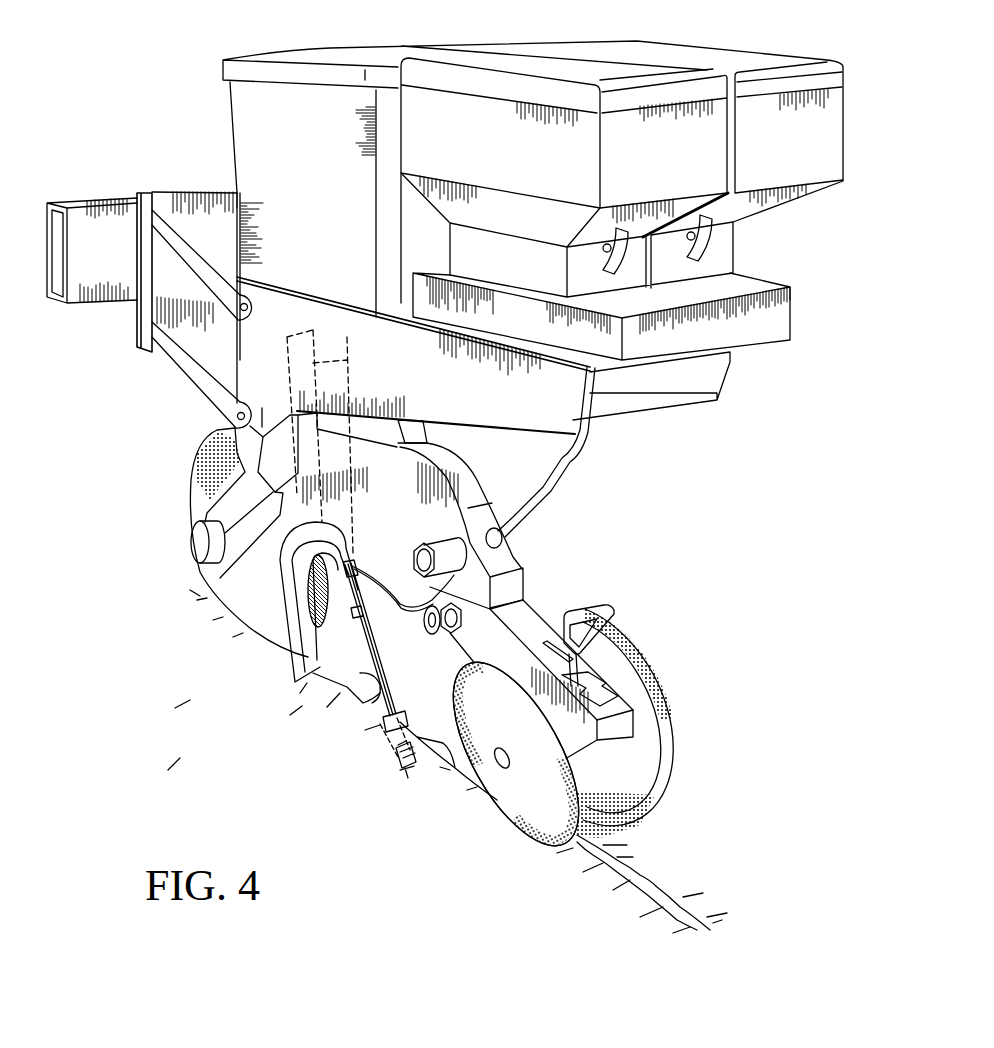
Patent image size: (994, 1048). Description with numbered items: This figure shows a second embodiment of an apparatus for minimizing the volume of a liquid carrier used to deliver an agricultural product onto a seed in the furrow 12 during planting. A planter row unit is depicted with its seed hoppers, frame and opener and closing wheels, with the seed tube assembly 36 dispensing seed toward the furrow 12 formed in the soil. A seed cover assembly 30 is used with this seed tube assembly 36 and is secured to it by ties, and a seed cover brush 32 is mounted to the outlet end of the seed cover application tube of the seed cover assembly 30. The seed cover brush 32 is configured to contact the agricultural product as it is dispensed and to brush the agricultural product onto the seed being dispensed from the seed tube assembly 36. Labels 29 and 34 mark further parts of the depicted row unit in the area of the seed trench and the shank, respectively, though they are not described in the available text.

The furrow 12 is at (664, 893).
The seed trench 29 is at (308, 699).
The seed cover assembly 30 is at (364, 706).
The seed cover brush 32 is at (406, 773).
The shank 34 is at (525, 590).
The seed tube assembly 36 is at (338, 626).